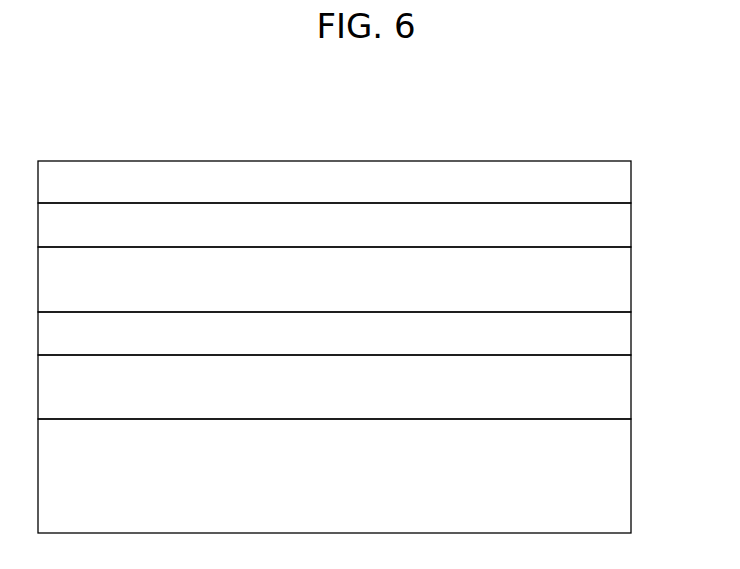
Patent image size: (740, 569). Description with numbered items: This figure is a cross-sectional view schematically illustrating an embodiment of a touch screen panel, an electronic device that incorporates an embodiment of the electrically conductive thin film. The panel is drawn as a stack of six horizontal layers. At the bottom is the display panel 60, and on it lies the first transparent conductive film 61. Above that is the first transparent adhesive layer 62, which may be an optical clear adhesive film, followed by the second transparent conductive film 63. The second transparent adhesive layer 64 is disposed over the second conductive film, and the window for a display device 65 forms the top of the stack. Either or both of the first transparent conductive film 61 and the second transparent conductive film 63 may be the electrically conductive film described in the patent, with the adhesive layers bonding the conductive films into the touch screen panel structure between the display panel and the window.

The display panel 60 is at (617, 485).
The first transparent conductive film 61 is at (617, 388).
The first transparent adhesive layer 62 is at (617, 337).
The second transparent conductive film 63 is at (617, 282).
The second transparent adhesive layer 64 is at (617, 227).
The window for a display device 65 is at (617, 182).